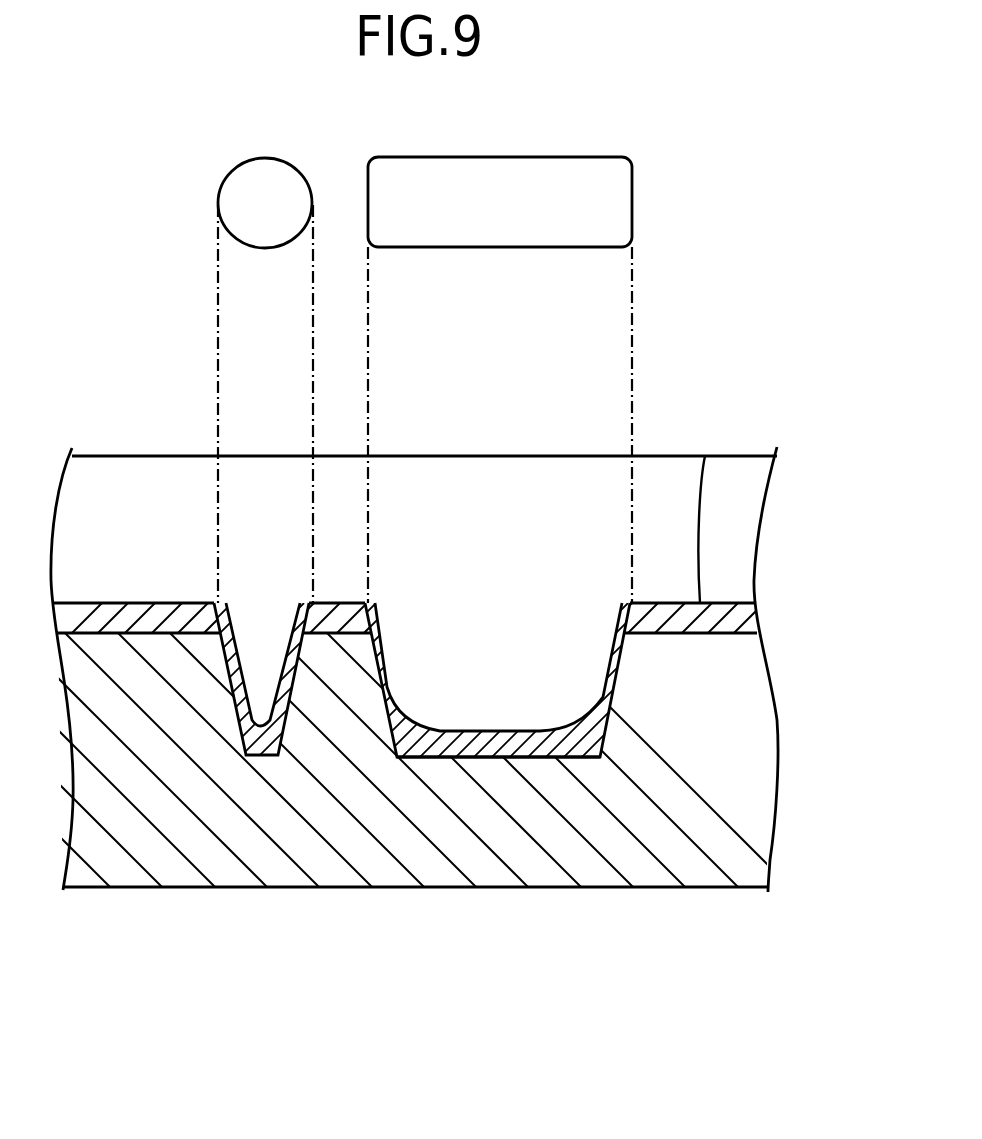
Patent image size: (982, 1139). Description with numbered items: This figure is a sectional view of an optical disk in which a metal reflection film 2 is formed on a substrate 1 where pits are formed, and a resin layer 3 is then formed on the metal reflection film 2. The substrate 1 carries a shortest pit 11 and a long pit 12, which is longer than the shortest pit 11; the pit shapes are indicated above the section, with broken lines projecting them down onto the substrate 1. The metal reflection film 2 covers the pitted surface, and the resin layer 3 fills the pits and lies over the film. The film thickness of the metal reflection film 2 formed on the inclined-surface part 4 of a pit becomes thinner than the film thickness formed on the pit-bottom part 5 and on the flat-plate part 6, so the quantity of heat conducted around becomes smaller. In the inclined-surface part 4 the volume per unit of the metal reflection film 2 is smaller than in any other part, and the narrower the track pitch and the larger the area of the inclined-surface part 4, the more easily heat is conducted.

The substrate 1 is at (738, 802).
The metal reflection film 2 is at (743, 613).
The resin layer 3 is at (740, 530).
The inclined-surface part 4 is at (625, 700).
The pit-bottom part 5 is at (548, 760).
The flat-plate part 6 is at (705, 456).
The shortest pit 11 is at (267, 158).
The long pit 12 is at (494, 157).